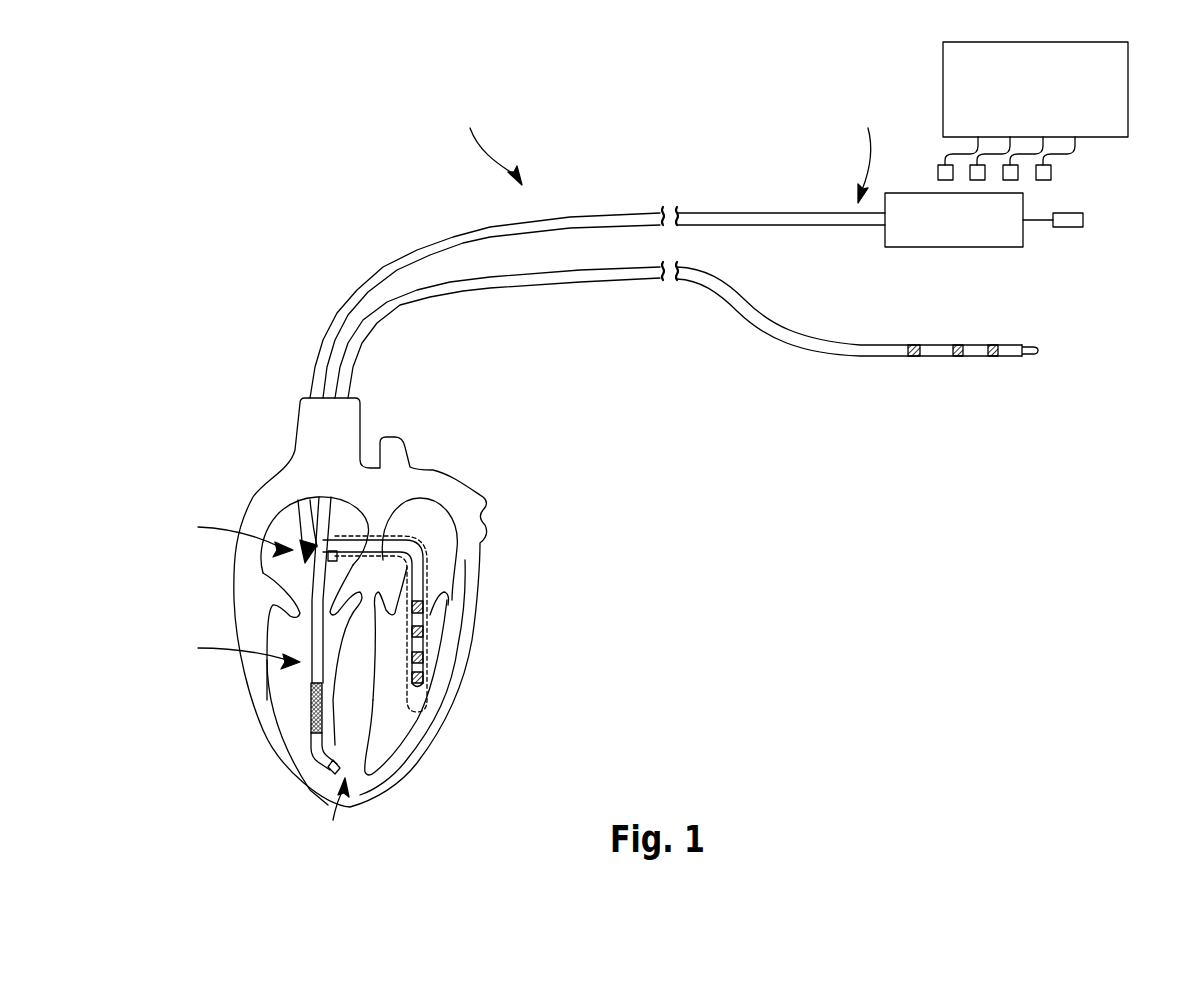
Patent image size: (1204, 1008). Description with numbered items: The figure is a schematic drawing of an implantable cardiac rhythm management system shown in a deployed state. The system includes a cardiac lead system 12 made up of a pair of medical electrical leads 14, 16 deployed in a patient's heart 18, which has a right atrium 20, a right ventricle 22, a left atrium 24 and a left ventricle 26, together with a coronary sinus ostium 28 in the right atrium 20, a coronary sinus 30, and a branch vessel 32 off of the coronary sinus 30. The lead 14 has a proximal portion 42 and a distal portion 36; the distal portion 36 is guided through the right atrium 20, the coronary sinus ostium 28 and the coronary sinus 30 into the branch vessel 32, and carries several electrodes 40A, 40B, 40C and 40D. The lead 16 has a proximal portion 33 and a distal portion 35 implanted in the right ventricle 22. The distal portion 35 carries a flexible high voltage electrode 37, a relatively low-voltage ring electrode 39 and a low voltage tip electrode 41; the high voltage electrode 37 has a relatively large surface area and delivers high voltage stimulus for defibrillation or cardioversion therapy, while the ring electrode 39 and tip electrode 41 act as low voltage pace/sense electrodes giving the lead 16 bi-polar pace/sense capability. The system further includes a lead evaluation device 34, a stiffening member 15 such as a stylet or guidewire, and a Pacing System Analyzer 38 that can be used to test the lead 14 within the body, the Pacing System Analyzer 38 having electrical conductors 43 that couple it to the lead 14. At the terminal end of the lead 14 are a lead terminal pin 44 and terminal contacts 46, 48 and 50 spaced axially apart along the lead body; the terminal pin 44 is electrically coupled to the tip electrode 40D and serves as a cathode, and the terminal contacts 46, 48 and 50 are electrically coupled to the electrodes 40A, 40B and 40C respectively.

The cardiac lead system 12 is at (490, 142).
The medical electrical lead 14 is at (750, 217).
The stiffening member 15 is at (1038, 221).
The medical electrical lead 16 is at (760, 317).
The heart 18 is at (480, 630).
The right atrium 20 is at (263, 575).
The right ventricle 22 is at (290, 693).
The left atrium 24 is at (420, 520).
The left ventricle 26 is at (400, 737).
The coronary sinus ostium 28 is at (363, 508).
The coronary sinus 30 is at (420, 560).
The branch vessel 32 is at (407, 640).
The proximal portion 33 is at (513, 285).
The lead evaluation device 34 is at (942, 238).
The distal portion 35 is at (237, 651).
The distal portion 36 is at (234, 535).
The high voltage electrode 37 is at (307, 707).
The Pacing System Analyzer 38 is at (1123, 92).
The ring electrode 39 is at (323, 763).
The electrode 40A is at (427, 608).
The electrode 40B is at (427, 633).
The electrode 40C is at (427, 660).
The tip electrode 40D is at (427, 681).
The tip electrode 41 is at (337, 820).
The proximal portion 42 is at (863, 151).
The electrical conductors 43 is at (1068, 150).
The lead terminal pin 44 is at (1038, 349).
The terminal contact 46 is at (913, 357).
The terminal contact 48 is at (958, 357).
The terminal contact 50 is at (993, 357).